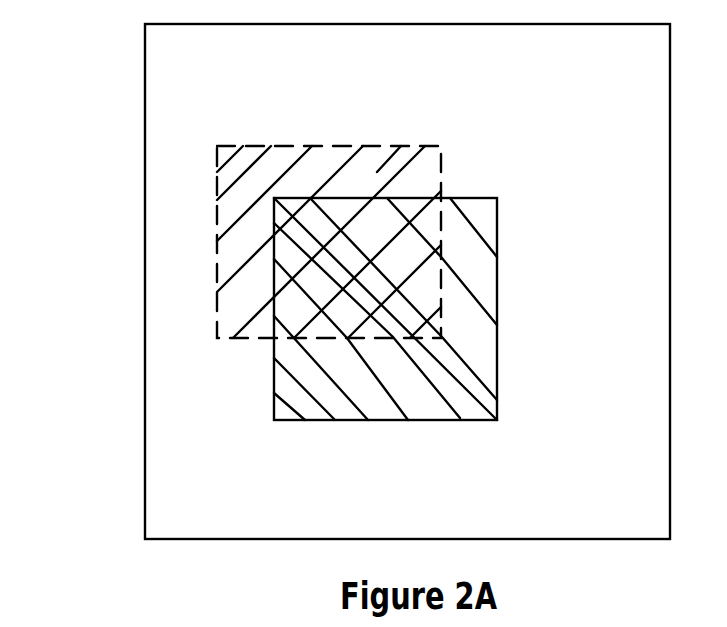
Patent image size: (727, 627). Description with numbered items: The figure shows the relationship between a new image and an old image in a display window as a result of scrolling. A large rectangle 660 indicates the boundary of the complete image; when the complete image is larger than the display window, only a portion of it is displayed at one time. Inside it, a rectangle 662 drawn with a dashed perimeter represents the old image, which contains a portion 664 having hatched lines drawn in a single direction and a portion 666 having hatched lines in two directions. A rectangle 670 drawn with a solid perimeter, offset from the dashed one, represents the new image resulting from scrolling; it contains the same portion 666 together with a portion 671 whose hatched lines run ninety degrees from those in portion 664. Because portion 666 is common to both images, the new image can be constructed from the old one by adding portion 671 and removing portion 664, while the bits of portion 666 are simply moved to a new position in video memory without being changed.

The rectangle indicating boundary of complete image 660 is at (144, 284).
The rectangle representing old image 662 is at (252, 147).
The portion having hatched lines in a single direction 664 is at (406, 146).
The common portion 666 is at (423, 217).
The rectangle representing new image 670 is at (322, 420).
The portion having hatched lines in a different direction 671 is at (480, 365).